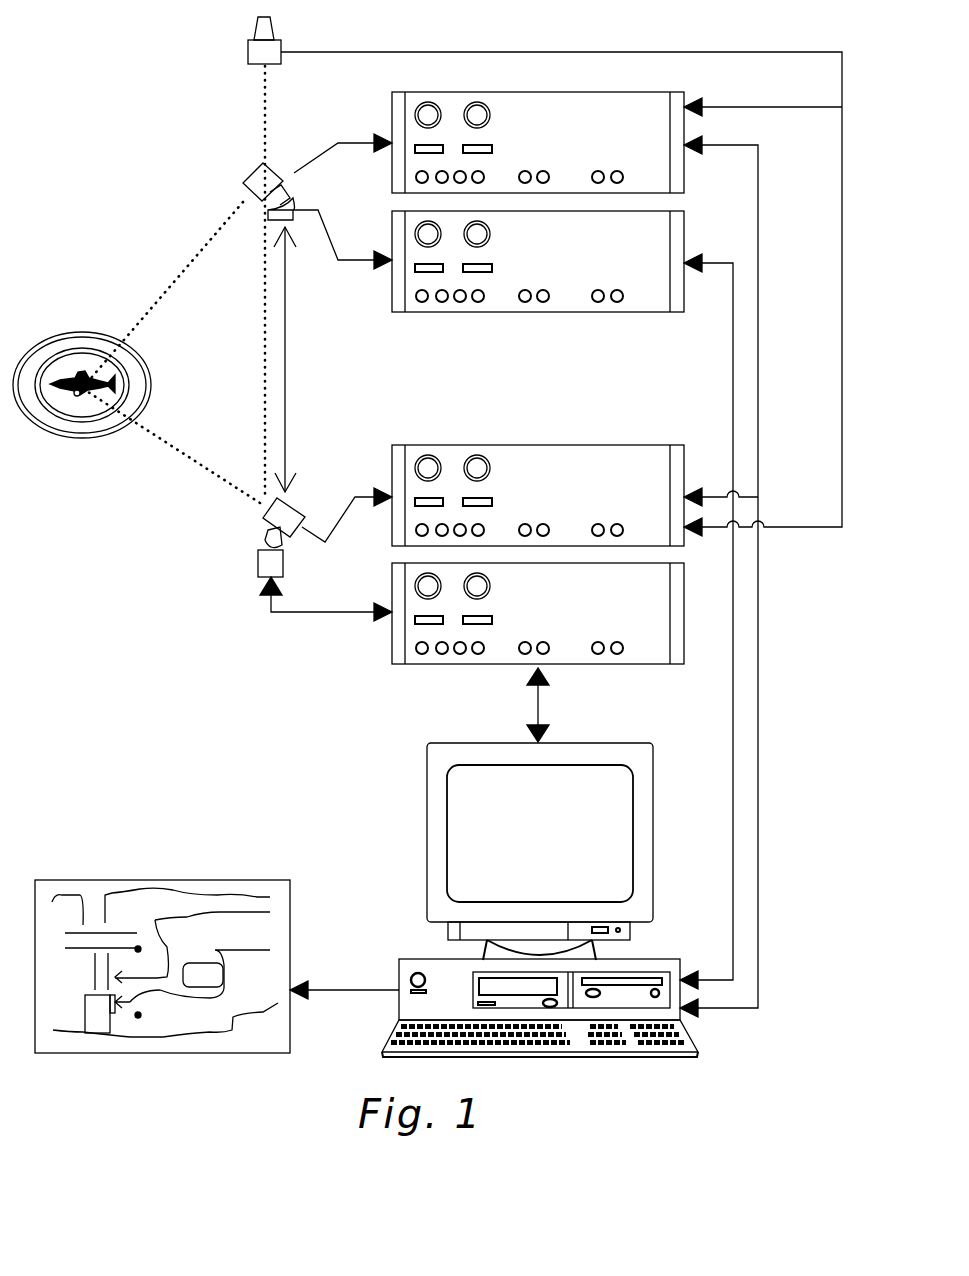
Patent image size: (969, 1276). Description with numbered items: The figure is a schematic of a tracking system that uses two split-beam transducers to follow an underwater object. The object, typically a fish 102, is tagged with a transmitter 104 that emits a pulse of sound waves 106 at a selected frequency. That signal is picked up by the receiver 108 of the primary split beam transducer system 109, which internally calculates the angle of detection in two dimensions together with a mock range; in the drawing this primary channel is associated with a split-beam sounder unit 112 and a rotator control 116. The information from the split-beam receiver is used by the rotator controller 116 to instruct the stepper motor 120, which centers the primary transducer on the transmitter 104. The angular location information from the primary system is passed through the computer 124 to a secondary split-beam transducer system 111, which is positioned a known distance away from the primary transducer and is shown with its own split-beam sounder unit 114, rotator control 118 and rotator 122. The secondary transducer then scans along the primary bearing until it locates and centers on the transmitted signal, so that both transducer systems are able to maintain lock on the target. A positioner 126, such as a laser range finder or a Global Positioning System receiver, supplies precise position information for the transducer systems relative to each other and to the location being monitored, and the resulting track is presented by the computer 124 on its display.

The fish 102 is at (58, 365).
The transmitter 104 is at (76, 396).
The sound waves 106 is at (100, 435).
The receiver 108 is at (302, 500).
The primary split beam transducer system 109 is at (320, 625).
The secondary split-beam transducer system 111 is at (313, 143).
The lower split-beam sounder 112 is at (635, 457).
The upper split-beam sounder 114 is at (645, 100).
The rotator controller 116 is at (655, 598).
The upper rotator control 118 is at (642, 300).
The stepper motor 120 is at (258, 563).
The upper rotator 122 is at (268, 215).
The computer 124 is at (665, 830).
The positioner 126 is at (252, 32).